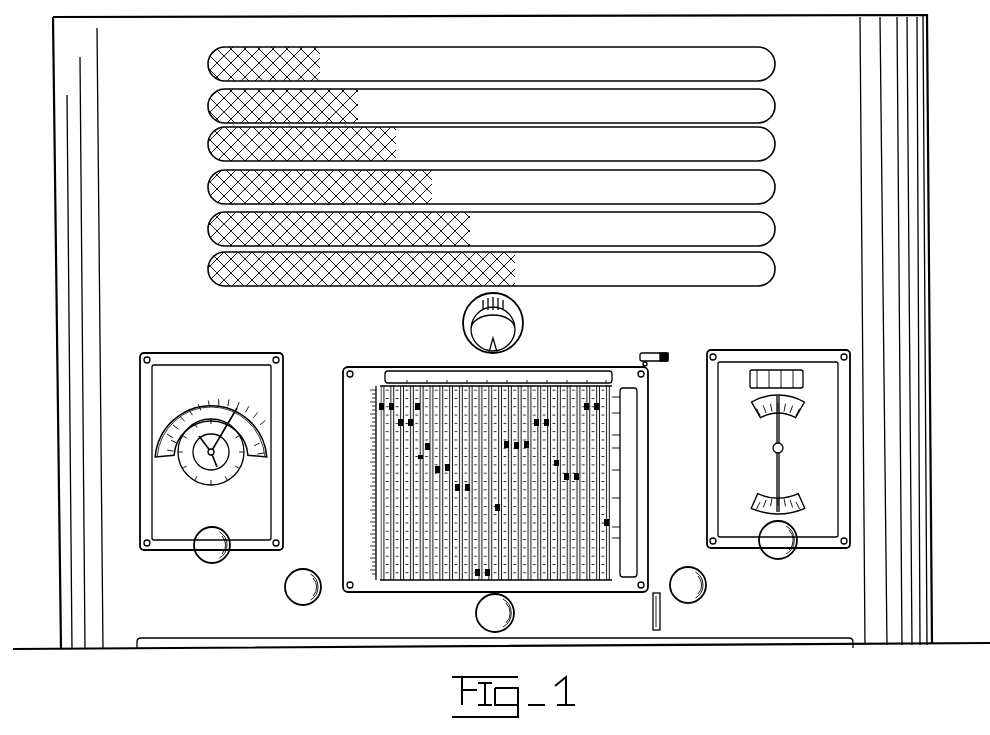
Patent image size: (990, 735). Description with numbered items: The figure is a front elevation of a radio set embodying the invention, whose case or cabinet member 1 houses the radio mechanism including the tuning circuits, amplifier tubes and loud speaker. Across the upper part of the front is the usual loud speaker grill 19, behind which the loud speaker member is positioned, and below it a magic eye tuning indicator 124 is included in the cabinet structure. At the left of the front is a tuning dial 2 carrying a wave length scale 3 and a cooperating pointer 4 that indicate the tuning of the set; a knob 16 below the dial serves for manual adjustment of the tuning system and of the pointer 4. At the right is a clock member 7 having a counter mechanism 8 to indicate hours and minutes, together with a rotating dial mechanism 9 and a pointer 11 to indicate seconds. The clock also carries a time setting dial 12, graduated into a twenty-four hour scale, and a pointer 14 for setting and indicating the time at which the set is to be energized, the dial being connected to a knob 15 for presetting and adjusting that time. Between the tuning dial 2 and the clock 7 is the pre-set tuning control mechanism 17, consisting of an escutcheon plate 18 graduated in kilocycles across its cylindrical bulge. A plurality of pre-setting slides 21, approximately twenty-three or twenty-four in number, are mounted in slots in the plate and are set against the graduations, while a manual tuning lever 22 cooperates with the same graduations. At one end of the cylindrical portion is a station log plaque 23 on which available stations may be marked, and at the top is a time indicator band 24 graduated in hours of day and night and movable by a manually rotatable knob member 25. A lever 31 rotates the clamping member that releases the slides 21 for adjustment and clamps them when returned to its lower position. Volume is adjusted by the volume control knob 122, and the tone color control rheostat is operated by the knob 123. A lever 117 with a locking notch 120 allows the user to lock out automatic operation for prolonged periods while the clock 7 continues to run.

The case or cabinet member 1 is at (917, 160).
The loud speaker grill 19 is at (210, 152).
The magic eye tuning indicator 124 is at (468, 327).
The tuning dial 2 is at (201, 357).
The wave length scale 3 is at (190, 399).
The pointer 4 is at (243, 424).
The knob 16 is at (200, 560).
The volume control knob 122 is at (286, 595).
The escutcheon plate 18 is at (343, 514).
The time indicator band 24 is at (427, 373).
The pre-set tuning control mechanism 17 is at (616, 369).
The manual tuning lever 22 is at (383, 579).
The pre-setting slides 21 is at (598, 578).
The station log plaque 23 is at (630, 457).
The manually rotatable knob member 25 is at (476, 614).
The lever 117 is at (666, 343).
The locking notch 120 is at (648, 366).
The clock member 7 is at (780, 354).
The counter mechanism 8 is at (804, 386).
The rotating dial mechanism 9 is at (752, 407).
The pointer 11 is at (781, 433).
The time setting dial 12 is at (813, 493).
The pointer 14 is at (775, 482).
The knob 15 is at (786, 558).
The knob 123 is at (706, 592).
The lever 31 is at (660, 622).